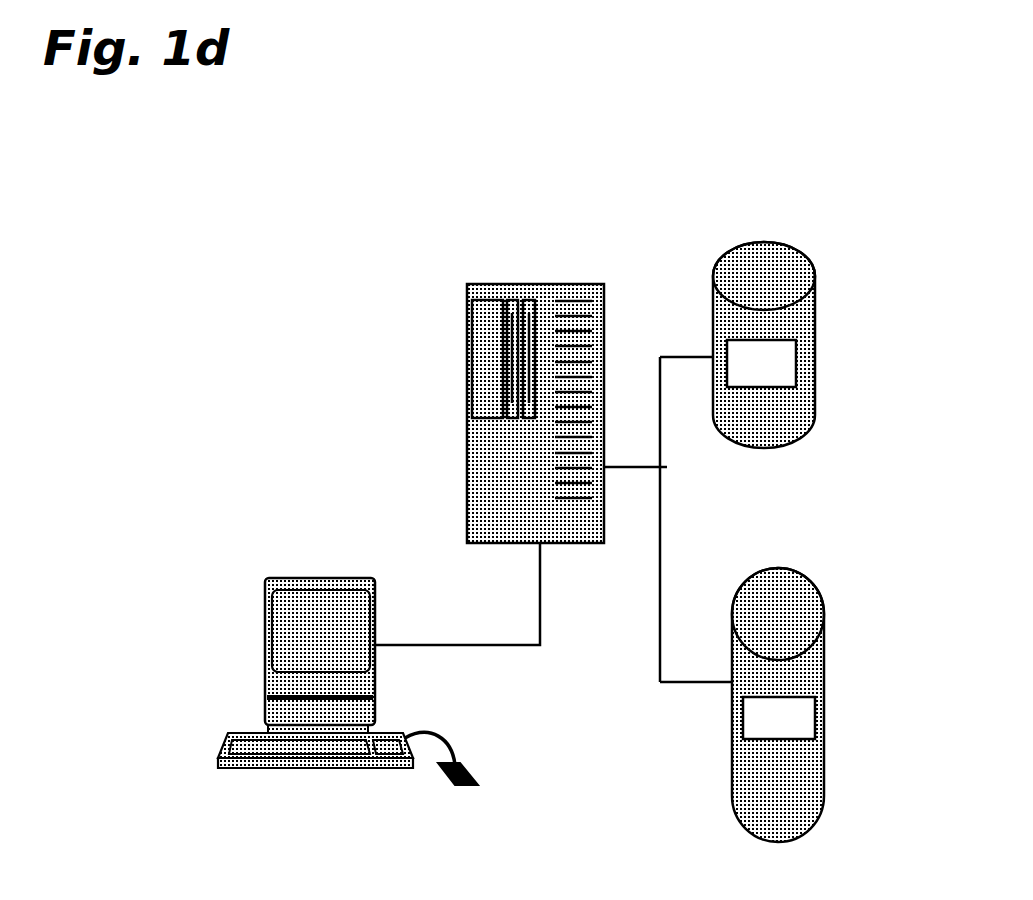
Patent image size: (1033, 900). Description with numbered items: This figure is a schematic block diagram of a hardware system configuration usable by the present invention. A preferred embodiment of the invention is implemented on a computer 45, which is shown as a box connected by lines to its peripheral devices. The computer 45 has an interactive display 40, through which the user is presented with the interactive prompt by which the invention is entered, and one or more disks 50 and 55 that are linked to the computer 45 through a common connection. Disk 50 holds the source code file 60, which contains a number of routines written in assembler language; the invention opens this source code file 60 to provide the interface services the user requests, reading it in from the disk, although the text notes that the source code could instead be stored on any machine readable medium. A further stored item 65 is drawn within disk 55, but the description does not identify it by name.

The interactive display 40 is at (258, 625).
The computer 45 is at (469, 306).
The disk 50 is at (750, 241).
The disk 55 is at (818, 575).
The source code file 60 is at (797, 372).
The data record in second database 65 is at (817, 730).